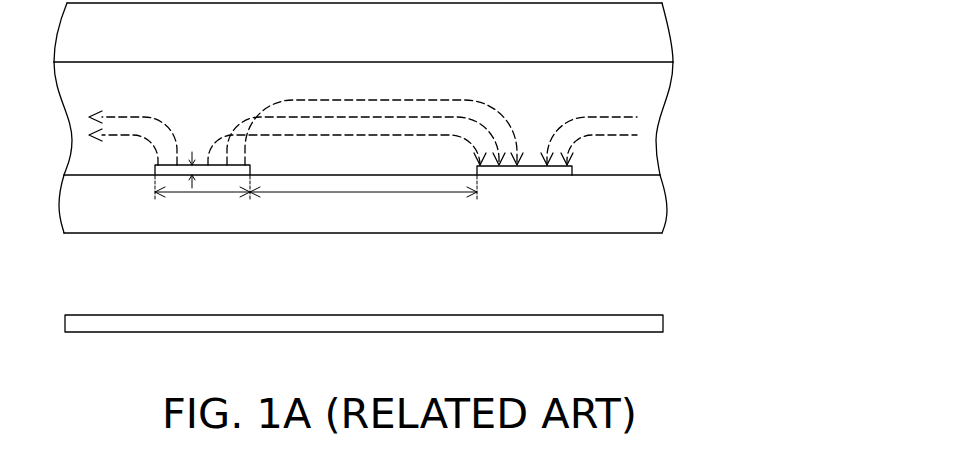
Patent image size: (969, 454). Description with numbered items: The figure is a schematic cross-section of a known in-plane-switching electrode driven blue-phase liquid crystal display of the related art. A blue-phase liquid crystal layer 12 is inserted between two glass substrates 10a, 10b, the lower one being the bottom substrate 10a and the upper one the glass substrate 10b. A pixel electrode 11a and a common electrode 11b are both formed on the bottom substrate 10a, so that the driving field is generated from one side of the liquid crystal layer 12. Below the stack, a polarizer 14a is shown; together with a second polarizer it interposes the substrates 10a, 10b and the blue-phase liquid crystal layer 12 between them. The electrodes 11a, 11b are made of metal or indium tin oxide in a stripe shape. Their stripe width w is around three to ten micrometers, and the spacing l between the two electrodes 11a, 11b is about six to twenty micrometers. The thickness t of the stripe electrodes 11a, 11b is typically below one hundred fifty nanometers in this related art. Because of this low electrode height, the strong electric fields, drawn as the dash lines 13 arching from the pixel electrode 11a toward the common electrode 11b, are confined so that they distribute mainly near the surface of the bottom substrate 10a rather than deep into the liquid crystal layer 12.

The bottom substrate 10a is at (640, 210).
The glass substrate 10b is at (647, 41).
The pixel electrode 11a is at (152, 172).
The common electrode 11b is at (560, 171).
The blue-phase liquid crystal layer 12 is at (633, 82).
The dash lines 13 is at (500, 120).
The polarizer 14a is at (645, 323).
The thickness t is at (190, 172).
The stripe width w is at (202, 198).
The spacing l is at (367, 217).